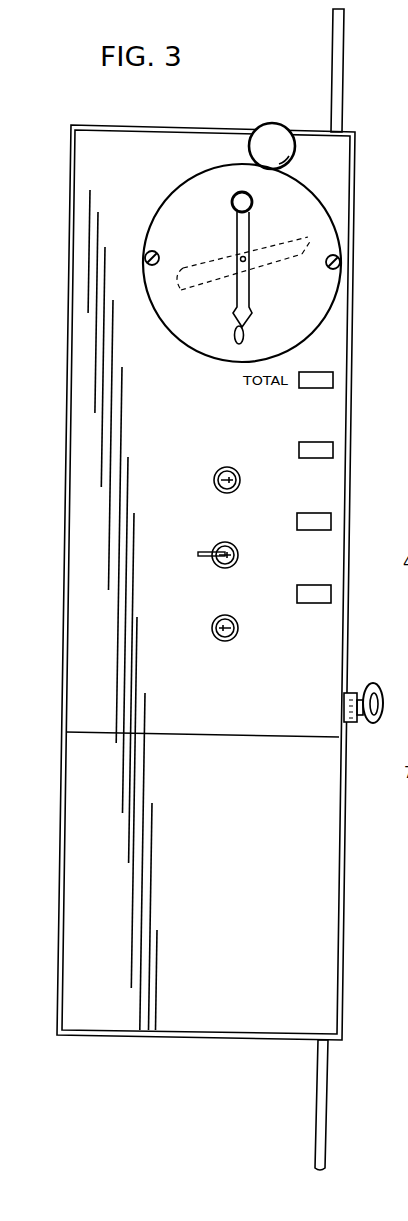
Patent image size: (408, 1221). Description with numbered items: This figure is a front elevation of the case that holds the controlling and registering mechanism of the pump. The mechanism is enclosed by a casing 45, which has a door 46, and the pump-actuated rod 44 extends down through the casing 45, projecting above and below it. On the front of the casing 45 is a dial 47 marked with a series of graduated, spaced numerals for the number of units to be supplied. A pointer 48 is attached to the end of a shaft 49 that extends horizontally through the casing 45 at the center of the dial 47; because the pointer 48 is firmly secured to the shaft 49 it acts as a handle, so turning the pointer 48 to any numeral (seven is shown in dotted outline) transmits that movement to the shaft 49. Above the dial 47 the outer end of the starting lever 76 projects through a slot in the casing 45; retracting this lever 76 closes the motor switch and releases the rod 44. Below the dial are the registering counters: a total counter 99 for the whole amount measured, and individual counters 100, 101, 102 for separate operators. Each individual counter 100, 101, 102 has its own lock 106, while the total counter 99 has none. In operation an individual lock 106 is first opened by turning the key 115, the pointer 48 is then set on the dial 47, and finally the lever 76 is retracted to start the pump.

The actuating rod 44 is at (343, 90).
The casing 45 is at (50, 858).
The door 46 is at (349, 636).
The dial 47 is at (181, 339).
The pointer 48 is at (250, 292).
The shaft 49 is at (240, 260).
The lever 76 is at (294, 152).
The total counter 99 is at (333, 382).
The registering counter 100 is at (333, 450).
The registering counter 101 is at (331, 522).
The registering counter 102 is at (331, 595).
The lock 106 is at (240, 485).
The key 115 is at (200, 556).